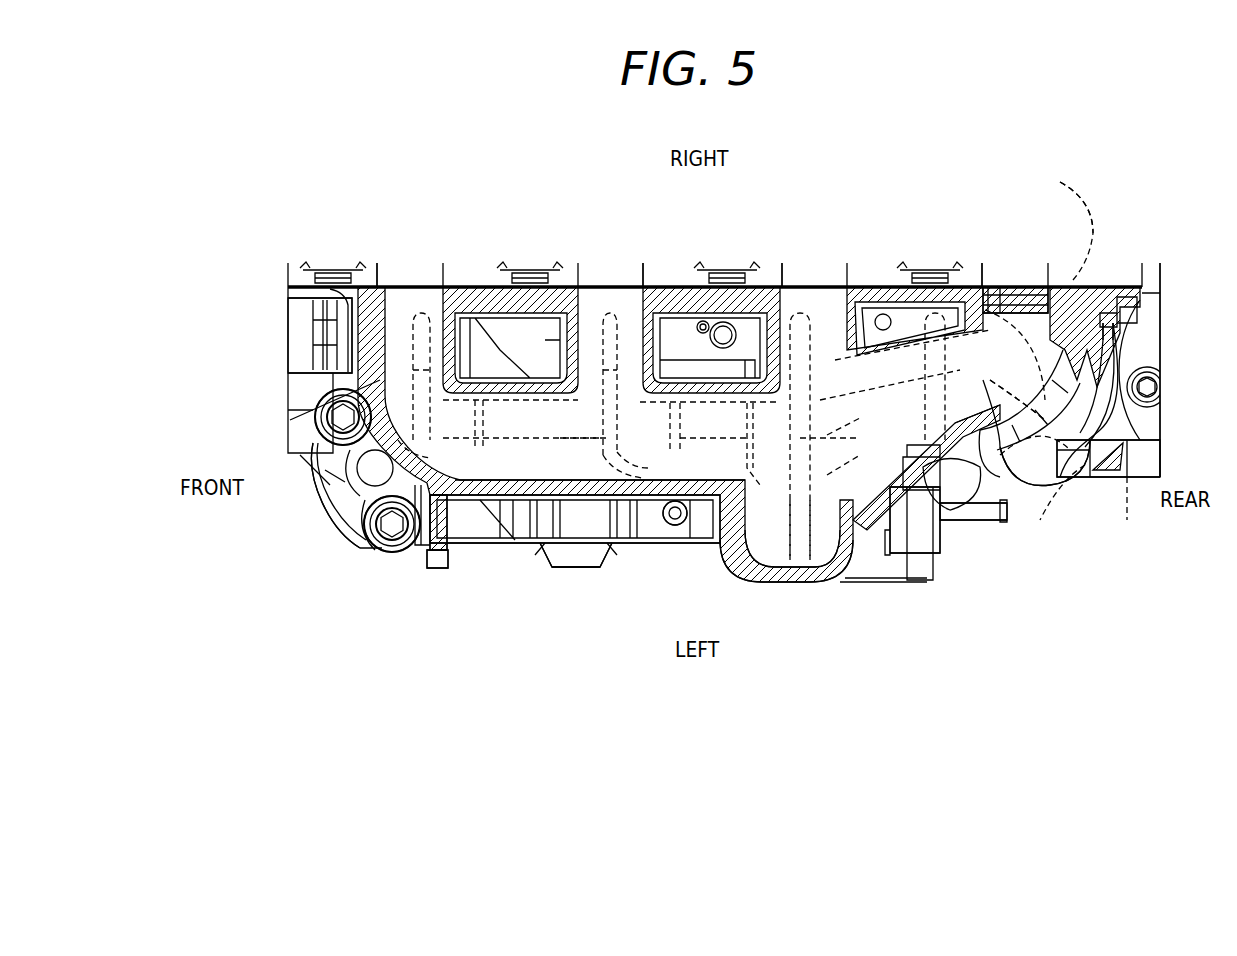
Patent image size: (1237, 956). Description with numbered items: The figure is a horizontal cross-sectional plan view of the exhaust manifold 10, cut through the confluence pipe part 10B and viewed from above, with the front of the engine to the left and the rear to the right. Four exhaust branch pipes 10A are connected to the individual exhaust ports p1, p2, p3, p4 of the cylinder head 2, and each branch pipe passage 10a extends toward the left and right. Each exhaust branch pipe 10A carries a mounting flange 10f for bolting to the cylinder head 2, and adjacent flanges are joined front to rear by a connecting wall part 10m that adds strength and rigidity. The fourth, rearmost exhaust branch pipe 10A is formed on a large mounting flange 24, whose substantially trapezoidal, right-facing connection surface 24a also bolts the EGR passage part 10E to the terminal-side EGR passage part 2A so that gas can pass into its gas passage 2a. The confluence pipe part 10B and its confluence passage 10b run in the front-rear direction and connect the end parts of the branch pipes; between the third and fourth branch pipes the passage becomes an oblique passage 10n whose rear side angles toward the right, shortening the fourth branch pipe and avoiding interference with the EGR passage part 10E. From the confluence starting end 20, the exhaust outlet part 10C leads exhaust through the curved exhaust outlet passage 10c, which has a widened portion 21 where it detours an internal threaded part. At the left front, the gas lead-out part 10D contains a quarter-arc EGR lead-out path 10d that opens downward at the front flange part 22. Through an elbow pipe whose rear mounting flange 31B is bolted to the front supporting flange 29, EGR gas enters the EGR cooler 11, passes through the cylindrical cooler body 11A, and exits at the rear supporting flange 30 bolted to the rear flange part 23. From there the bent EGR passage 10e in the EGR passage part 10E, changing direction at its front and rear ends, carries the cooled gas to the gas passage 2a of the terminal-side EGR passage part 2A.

The cylinder head 2 is at (502, 277).
The terminal-side EGR passage part 2A is at (1160, 282).
The gas passage 2a is at (1060, 182).
The exhaust manifold 10 is at (647, 497).
The exhaust branch pipe 10A is at (298, 313).
The branch pipe passage 10a is at (313, 336).
The confluence pipe part 10B is at (567, 563).
The confluence passage 10b is at (693, 452).
The exhaust outlet part 10C is at (780, 560).
The exhaust outlet passage 10c is at (833, 560).
The gas lead-out part 10D is at (313, 490).
The EGR lead-out path 10d is at (317, 407).
The EGR passage part 10E is at (1043, 447).
The EGR passage 10e is at (1127, 477).
The mounting flange 10f is at (303, 284).
The connecting wall part 10m is at (470, 300).
The oblique passage 10n is at (937, 415).
The EGR cooler 11 is at (523, 567).
The cooler body 11A is at (593, 567).
The confluence starting end 20 is at (762, 537).
The portion 21 is at (833, 560).
The front flange part 22 is at (347, 510).
The rear flange part 23 is at (900, 577).
The large mounting flange 24 is at (1108, 282).
The connection surface 24a is at (1010, 366).
The front supporting flange 29 is at (453, 567).
The rear supporting flange 30 is at (897, 577).
The rear mounting flange 31B is at (433, 567).
The exhaust port p1 is at (377, 275).
The exhaust port p2 is at (641, 278).
The exhaust port p3 is at (783, 277).
The exhaust port p4 is at (980, 277).